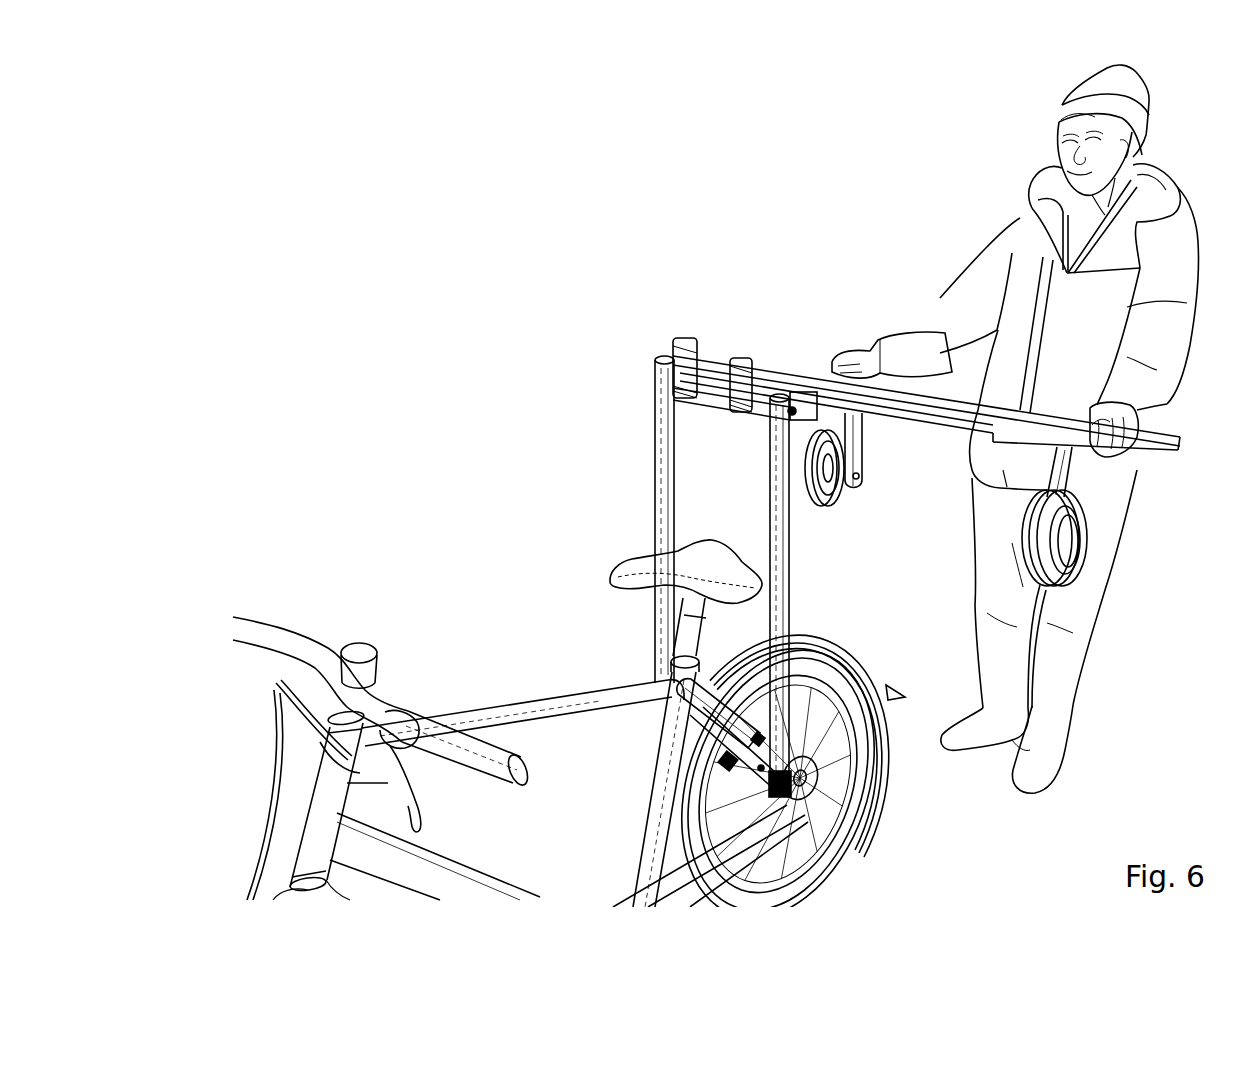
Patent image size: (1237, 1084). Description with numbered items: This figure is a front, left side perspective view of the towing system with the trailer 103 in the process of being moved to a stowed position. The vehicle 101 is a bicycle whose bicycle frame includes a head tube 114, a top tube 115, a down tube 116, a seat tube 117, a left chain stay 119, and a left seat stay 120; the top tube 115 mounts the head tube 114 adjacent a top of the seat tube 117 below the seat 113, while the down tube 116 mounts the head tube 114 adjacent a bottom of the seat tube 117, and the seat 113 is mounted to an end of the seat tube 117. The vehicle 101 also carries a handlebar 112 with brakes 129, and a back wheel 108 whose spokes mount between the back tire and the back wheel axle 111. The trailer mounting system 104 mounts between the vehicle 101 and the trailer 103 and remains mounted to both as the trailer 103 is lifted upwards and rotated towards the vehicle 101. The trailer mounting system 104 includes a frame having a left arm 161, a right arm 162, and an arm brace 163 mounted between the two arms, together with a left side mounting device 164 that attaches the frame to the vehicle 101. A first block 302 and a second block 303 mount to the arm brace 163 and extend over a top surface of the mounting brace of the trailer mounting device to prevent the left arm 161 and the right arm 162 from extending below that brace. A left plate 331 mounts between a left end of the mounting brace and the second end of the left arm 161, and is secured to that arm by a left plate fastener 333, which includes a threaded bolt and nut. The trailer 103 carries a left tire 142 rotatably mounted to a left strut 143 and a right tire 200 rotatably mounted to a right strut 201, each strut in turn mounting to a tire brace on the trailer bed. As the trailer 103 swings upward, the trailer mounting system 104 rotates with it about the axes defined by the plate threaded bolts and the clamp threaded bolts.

The vehicle 101 is at (555, 686).
The trailer 103 is at (779, 351).
The trailer mounting system 104 is at (839, 514).
The back wheel 108 is at (812, 784).
The back wheel axle 111 is at (795, 791).
The handlebar 112 is at (274, 632).
The seat 113 is at (627, 568).
The head tube 114 is at (315, 818).
The top tube 115 is at (473, 712).
The down tube 116 is at (448, 880).
The seat tube 117 is at (647, 793).
The left chain stay 119 is at (758, 828).
The left seat stay 120 is at (700, 704).
The brakes 129 is at (266, 691).
The left tire 142 is at (1062, 578).
The left strut 143 is at (1068, 460).
The left arm 161 is at (789, 615).
The right arm 162 is at (665, 431).
The arm brace 163 is at (713, 408).
The left side mounting device 164 is at (724, 763).
The right tire 200 is at (840, 503).
The right strut 201 is at (860, 434).
The first block 302 is at (683, 347).
The second block 303 is at (742, 365).
The left plate 331 is at (803, 408).
The left plate fastener 333 is at (794, 428).